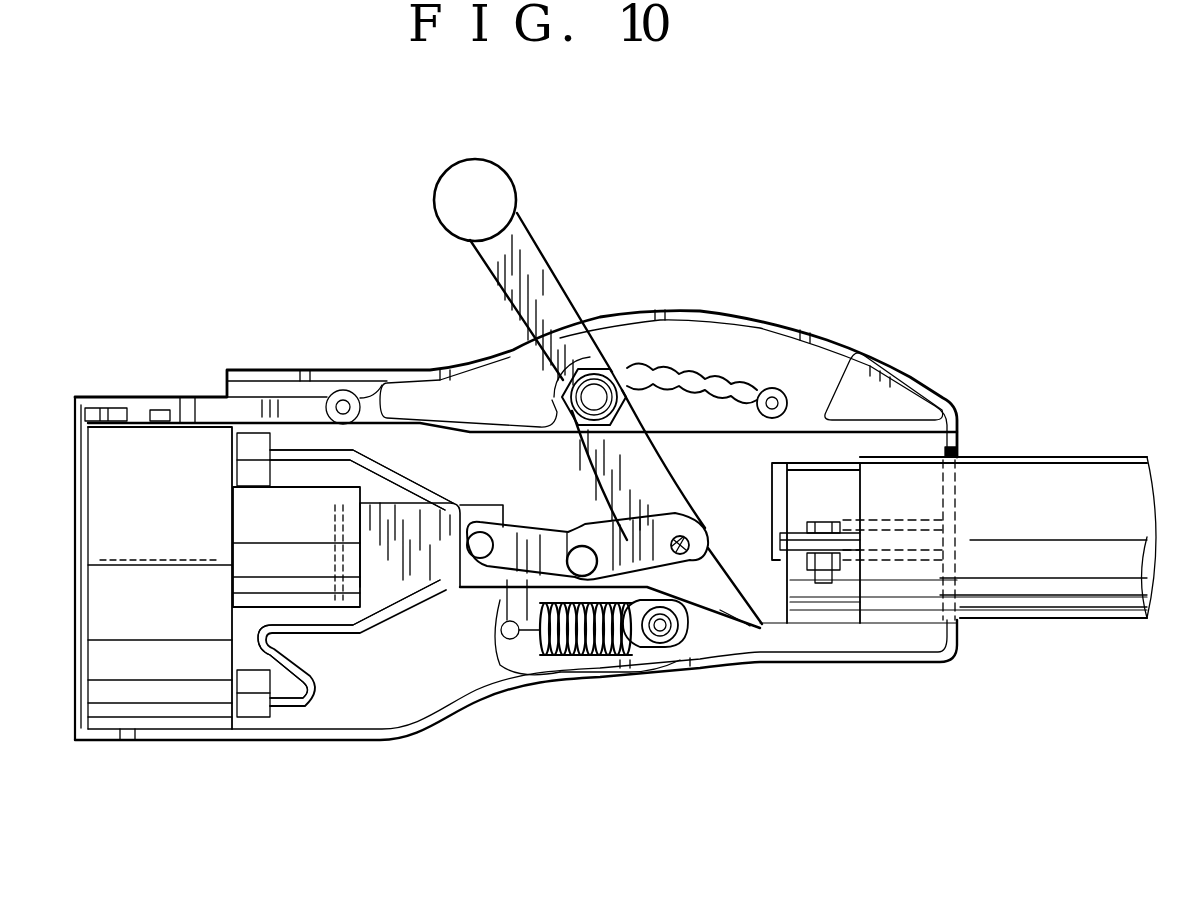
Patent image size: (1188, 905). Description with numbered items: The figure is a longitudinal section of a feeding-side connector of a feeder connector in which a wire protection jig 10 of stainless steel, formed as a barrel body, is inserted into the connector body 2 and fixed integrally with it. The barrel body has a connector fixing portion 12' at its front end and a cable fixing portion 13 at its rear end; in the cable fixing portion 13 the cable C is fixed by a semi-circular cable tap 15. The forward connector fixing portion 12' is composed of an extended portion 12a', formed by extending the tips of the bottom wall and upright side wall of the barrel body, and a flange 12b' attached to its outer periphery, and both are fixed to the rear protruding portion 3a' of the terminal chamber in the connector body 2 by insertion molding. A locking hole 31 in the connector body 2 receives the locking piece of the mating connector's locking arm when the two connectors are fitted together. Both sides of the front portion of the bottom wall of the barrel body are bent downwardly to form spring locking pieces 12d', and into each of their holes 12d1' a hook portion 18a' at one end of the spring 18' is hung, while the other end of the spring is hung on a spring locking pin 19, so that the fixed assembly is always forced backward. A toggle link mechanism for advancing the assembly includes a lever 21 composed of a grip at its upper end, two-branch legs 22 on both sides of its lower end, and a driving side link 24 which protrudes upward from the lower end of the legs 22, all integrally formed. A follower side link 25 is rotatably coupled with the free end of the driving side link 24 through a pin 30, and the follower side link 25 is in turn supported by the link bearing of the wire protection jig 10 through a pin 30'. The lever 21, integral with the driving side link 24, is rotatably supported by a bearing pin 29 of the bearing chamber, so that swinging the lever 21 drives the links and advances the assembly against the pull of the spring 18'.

The connector body 2 is at (130, 712).
The rear protruding portion 3a' is at (257, 554).
The wire protection jig 10 is at (740, 628).
The connector fixing portion 12' is at (358, 665).
The extended portion 12a' is at (361, 634).
The flange 12b' is at (352, 699).
The spring locking piece 12d' is at (512, 670).
The hole 12d1' is at (611, 699).
The cable fixing portion 13 is at (835, 610).
The cable tap 15 is at (838, 472).
The spring 18' is at (606, 698).
The hook portion 18a' is at (685, 681).
The spring locking pin 19 is at (740, 638).
The lever 21 is at (540, 267).
The two-branch legs 22 is at (665, 482).
The driving side link 24 is at (620, 547).
The follower side link 25 is at (512, 520).
The bearing pin 29 is at (690, 550).
The pin 30 is at (561, 521).
The pin 30' is at (457, 592).
The locking hole 31 is at (137, 412).
The cable C is at (1085, 487).